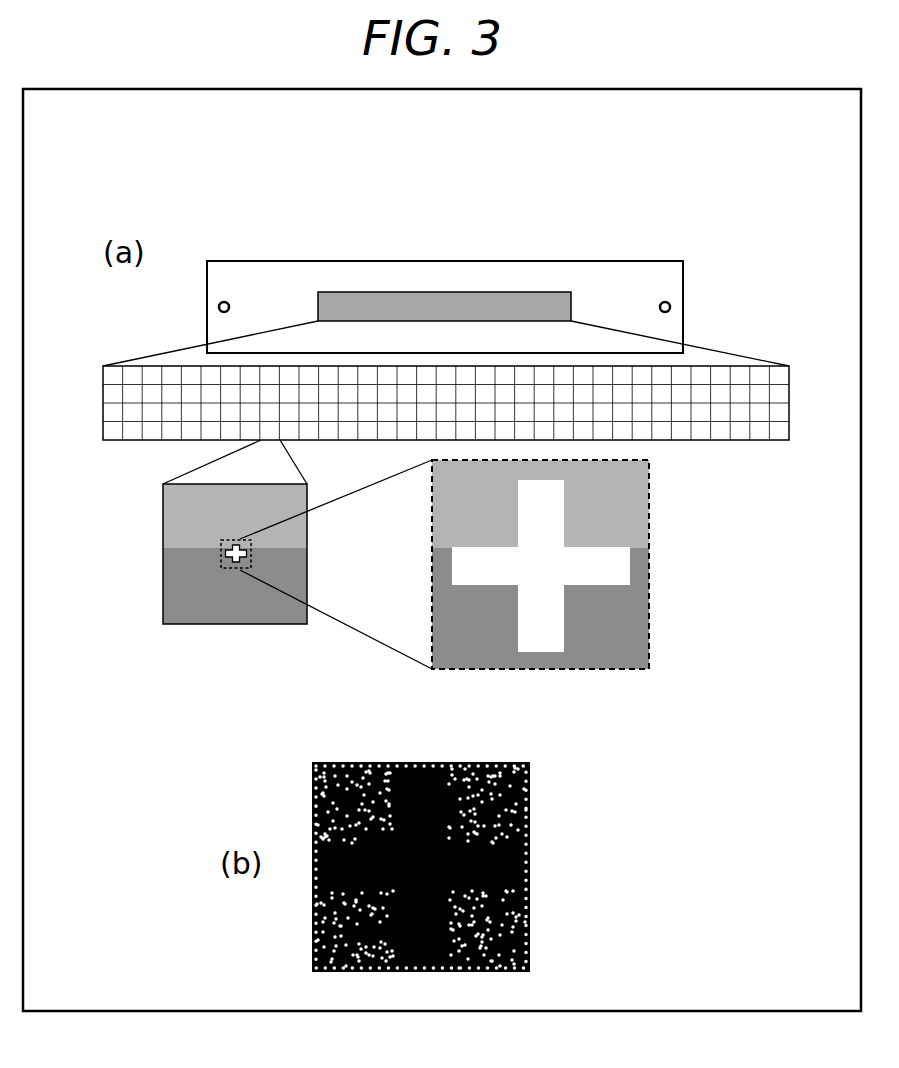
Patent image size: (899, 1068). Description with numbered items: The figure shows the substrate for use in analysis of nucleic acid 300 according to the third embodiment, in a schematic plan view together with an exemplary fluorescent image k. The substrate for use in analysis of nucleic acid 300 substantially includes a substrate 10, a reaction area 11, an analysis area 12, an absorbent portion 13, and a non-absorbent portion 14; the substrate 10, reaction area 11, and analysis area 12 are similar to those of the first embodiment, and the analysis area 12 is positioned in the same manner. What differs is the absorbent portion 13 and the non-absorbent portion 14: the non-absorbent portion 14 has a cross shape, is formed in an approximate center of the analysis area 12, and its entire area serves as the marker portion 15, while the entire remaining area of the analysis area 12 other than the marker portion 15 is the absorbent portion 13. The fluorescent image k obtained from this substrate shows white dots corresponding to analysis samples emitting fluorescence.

The substrate for use in analysis of nucleic acid 300 is at (607, 248).
The substrate 10 is at (282, 292).
The reaction area 11 is at (508, 303).
The analysis area 12 is at (130, 441).
The absorbent portion 13 is at (177, 575).
The non-absorbent portion 14 is at (606, 577).
The marker portion 15 is at (603, 567).
The fluorescent image k is at (533, 847).